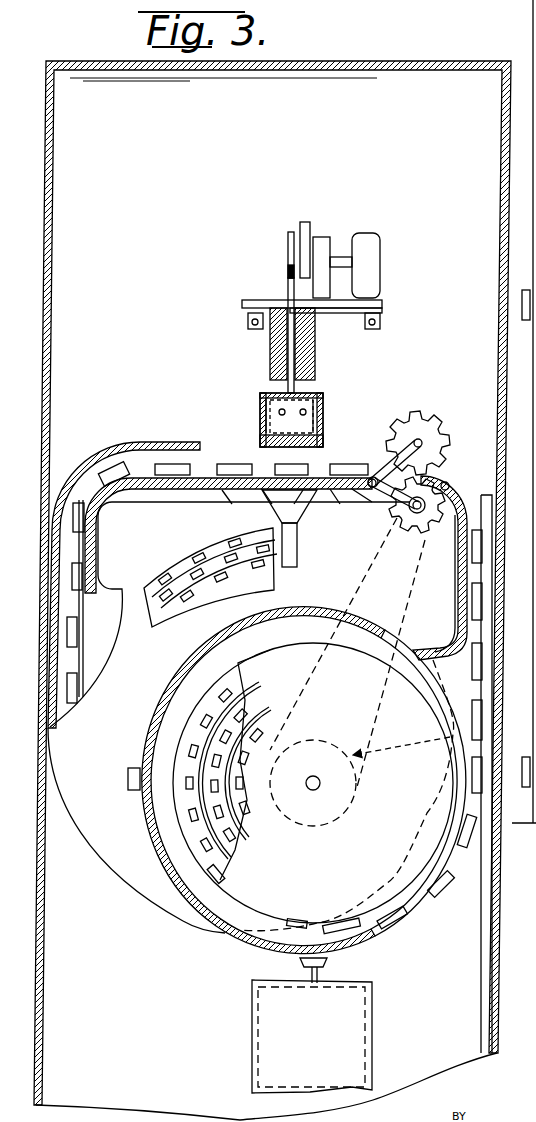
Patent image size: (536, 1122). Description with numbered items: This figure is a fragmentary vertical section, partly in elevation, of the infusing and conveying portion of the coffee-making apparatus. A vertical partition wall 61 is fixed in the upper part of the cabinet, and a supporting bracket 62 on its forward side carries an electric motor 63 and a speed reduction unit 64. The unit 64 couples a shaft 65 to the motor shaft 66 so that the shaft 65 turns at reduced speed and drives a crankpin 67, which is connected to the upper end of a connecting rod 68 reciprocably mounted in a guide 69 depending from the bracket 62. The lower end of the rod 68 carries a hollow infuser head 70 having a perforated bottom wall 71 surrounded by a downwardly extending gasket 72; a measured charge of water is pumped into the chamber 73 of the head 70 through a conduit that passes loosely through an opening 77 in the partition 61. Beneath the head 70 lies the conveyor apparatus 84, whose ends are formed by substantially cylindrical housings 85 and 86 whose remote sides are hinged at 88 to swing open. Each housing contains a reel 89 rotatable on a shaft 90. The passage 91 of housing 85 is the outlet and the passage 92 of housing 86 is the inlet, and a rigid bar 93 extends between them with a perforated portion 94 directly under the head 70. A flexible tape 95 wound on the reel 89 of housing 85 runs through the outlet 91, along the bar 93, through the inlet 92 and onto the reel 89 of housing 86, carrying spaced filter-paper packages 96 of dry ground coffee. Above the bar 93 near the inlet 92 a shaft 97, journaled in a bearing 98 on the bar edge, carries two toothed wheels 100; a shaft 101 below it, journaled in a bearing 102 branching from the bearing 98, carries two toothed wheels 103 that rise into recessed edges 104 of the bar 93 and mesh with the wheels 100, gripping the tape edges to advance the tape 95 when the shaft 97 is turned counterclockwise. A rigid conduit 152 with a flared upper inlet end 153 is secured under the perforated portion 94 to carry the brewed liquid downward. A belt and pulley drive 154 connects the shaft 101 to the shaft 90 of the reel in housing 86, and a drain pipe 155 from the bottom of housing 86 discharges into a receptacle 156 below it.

The vertical partition wall 61 is at (185, 495).
The supporting bracket 62 is at (355, 313).
The electric motor 63 is at (382, 277).
The speed reduction unit 64 is at (330, 243).
The shaft 65 is at (307, 234).
The motor shaft 66 is at (350, 264).
The crankpin 67 is at (288, 240).
The connecting rod 68 is at (272, 355).
The guide 69 is at (315, 368).
The hollow infuser head 70 is at (323, 401).
The perforated bottom wall 71 is at (323, 427).
The gasket 72 is at (266, 443).
The chamber 73 is at (282, 418).
The opening 77 is at (265, 397).
The conveyor apparatus 84 is at (184, 924).
The cylindrical housing 85 is at (115, 866).
The cylindrical housing 86 is at (420, 918).
The hinge 88 is at (130, 791).
The reel 89 is at (305, 652).
The shaft 90 is at (316, 790).
The passage (outlet) 91 is at (100, 551).
The passage (inlet) 92 is at (458, 570).
The rigid plate or bar 93 is at (222, 490).
The perforated portion 94 is at (364, 492).
The flexible tape 95 is at (258, 582).
The package 96 is at (82, 645).
The shaft 97 is at (432, 436).
The bearing 98 is at (381, 478).
The toothed wheel 100 is at (418, 416).
The shaft 101 is at (428, 530).
The bearing 102 is at (393, 505).
The toothed wheel 103 is at (410, 522).
The recessed edge 104 is at (456, 487).
The rigid conduit 152 is at (293, 553).
The flared upper inlet end 153 is at (276, 505).
The belt and pulley drive 154 is at (347, 795).
The drain pipe 155 is at (312, 972).
The receptacle 156 is at (373, 1036).